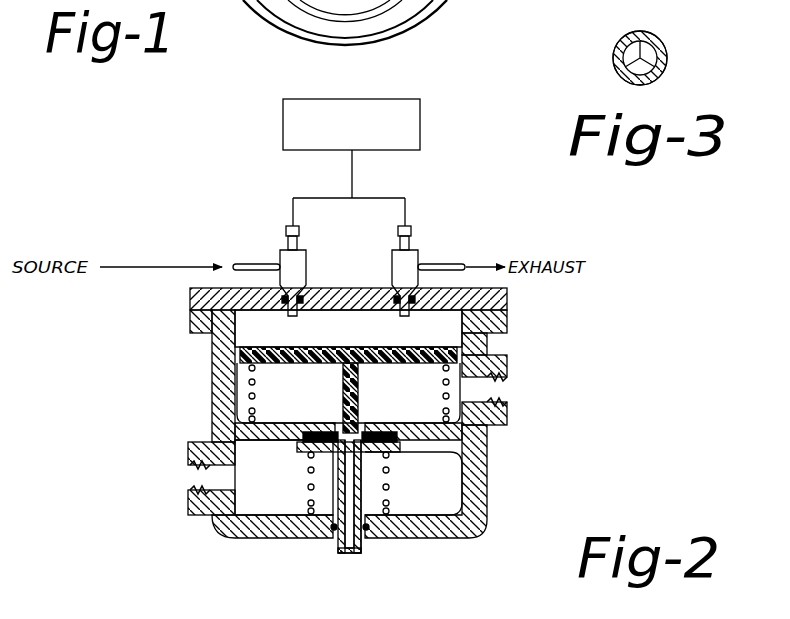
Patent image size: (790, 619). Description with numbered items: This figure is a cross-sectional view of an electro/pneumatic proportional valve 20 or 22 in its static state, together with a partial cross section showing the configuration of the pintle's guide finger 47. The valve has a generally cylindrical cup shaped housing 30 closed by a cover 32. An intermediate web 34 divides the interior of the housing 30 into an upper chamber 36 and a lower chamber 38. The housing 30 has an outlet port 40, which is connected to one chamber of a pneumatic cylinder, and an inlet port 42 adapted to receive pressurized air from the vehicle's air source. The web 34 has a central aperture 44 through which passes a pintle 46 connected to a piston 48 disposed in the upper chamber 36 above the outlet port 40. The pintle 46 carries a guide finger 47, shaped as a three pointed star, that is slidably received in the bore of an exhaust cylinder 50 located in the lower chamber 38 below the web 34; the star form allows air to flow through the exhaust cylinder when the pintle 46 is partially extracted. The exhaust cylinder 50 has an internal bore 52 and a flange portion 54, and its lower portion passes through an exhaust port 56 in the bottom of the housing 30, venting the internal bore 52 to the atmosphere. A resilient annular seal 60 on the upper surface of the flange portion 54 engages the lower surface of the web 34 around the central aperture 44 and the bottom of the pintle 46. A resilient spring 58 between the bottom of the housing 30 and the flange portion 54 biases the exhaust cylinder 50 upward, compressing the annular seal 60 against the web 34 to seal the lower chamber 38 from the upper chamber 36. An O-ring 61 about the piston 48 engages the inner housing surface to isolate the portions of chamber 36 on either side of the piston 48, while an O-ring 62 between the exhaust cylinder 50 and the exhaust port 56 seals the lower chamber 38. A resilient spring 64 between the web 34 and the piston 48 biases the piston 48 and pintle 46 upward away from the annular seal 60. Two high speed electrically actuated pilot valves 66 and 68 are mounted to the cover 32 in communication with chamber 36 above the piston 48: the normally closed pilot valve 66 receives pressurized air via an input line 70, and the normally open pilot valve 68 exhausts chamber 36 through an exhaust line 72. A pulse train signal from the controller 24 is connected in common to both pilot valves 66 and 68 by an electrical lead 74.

In FIG. 2, the electro/pneumatic proportional valve 20 is at (190, 556).
In FIG. 2, the electro/pneumatic proportional valve 22 is at (553, 292).
In FIG. 2, the controller 24 is at (420, 125).
In FIG. 2, the housing 30 is at (212, 408).
In FIG. 3, the housing 30 is at (666, 35).
In FIG. 2, the cover 32 is at (186, 279).
In FIG. 2, the intermediate web 34 is at (482, 453).
In FIG. 2, the upper chamber 36 is at (284, 346).
In FIG. 2, the lower chamber 38 is at (284, 507).
In FIG. 2, the outlet port 40 is at (500, 400).
In FIG. 2, the inlet port 42 is at (205, 478).
In FIG. 2, the central aperture 44 is at (348, 393).
In FIG. 2, the pintle 46 is at (362, 391).
In FIG. 2, the guide finger 47 is at (313, 479).
In FIG. 3, the guide finger 47 is at (612, 62).
In FIG. 2, the piston 48 is at (485, 346).
In FIG. 2, the exhaust cylinder 50 is at (386, 491).
In FIG. 2, the internal bore 52 is at (352, 553).
In FIG. 2, the flange portion 54 is at (300, 450).
In FIG. 2, the exhaust port 56 is at (335, 527).
In FIG. 2, the resilient spring 58 is at (388, 528).
In FIG. 2, the resilient annular seal 60 is at (358, 445).
In FIG. 2, the O-ring 61 is at (245, 358).
In FIG. 2, the O-ring 62 is at (372, 541).
In FIG. 2, the resilient spring 64 is at (240, 382).
In FIG. 2, the pilot valve 66 is at (288, 250).
In FIG. 2, the pilot valve 68 is at (418, 253).
In FIG. 2, the input line 70 is at (280, 263).
In FIG. 2, the exhaust line 72 is at (430, 265).
In FIG. 2, the electrical lead 74 is at (352, 176).